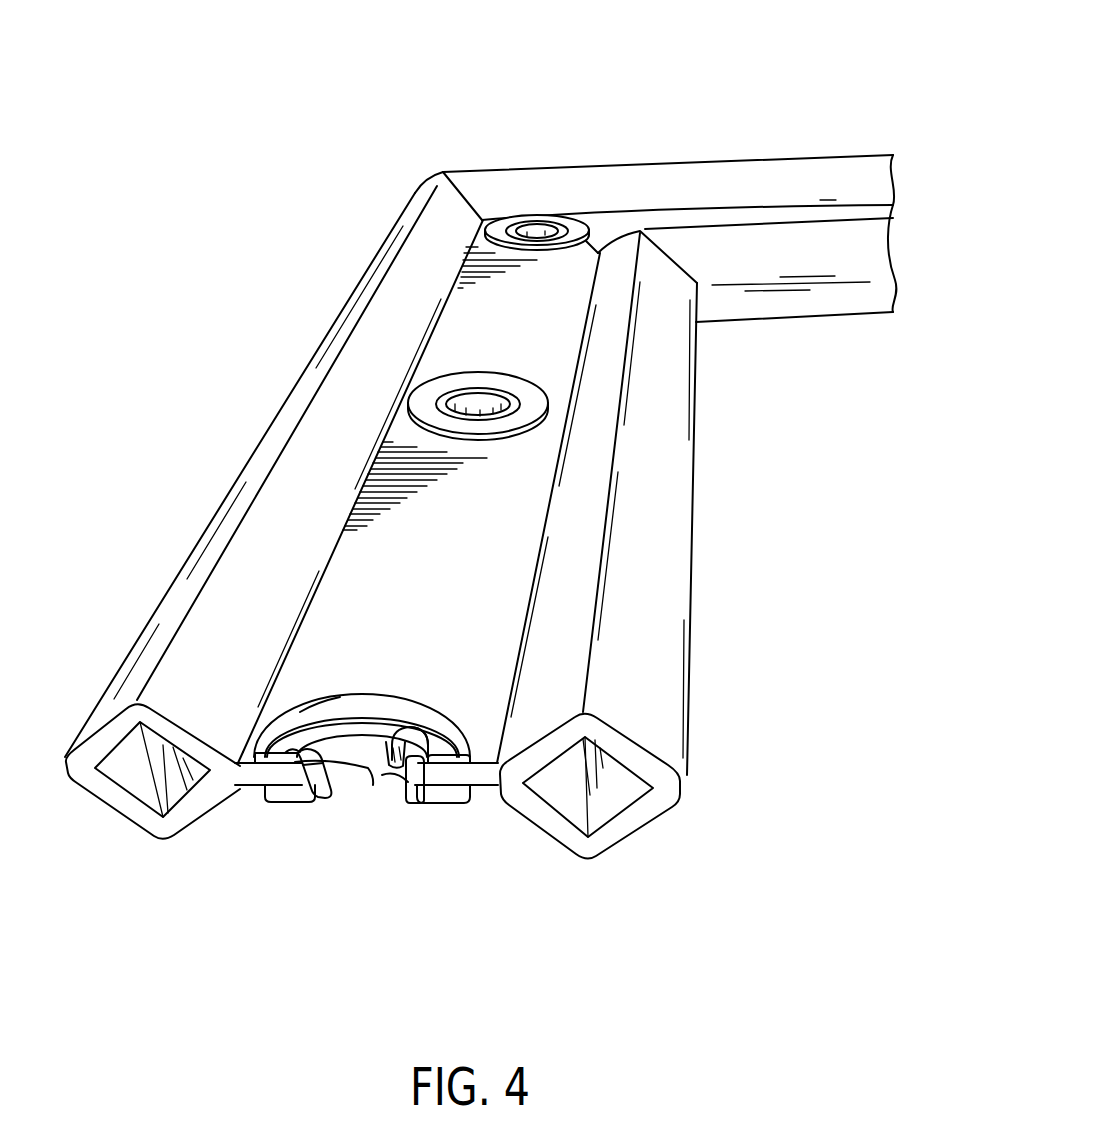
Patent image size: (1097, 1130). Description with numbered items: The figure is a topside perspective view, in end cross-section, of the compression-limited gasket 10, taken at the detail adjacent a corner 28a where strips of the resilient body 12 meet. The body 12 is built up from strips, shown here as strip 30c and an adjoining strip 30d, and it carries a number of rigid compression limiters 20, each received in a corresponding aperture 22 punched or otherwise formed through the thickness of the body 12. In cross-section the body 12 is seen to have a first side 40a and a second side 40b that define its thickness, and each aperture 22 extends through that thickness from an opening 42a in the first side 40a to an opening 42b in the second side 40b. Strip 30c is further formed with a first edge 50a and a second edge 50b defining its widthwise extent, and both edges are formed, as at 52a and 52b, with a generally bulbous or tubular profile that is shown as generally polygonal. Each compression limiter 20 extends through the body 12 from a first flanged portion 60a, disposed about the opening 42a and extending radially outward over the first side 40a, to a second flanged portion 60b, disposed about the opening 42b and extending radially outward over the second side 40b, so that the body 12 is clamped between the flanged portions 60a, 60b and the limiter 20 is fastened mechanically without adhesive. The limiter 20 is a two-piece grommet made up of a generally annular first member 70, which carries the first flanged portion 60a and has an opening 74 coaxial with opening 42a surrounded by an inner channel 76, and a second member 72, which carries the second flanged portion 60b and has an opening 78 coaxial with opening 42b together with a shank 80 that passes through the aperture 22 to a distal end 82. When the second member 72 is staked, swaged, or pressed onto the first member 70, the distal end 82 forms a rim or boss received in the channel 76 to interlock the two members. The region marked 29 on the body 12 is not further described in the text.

The compression-limited gasket 10 is at (645, 161).
The resilient body 12 is at (752, 156).
The compression limiter 20 is at (577, 222).
The aperture 22 is at (589, 240).
The corner 28a is at (443, 170).
The inner surface 29 is at (761, 541).
The strip 30c is at (303, 375).
The top surface of frame member 30d is at (515, 170).
The first side 40a is at (240, 752).
The second side 40b is at (237, 786).
The opening 42a is at (330, 796).
The opening 42b is at (321, 800).
The first edge 50a is at (263, 539).
The second edge 50b is at (654, 589).
The bulbous tubular profile 52a is at (88, 813).
The bulbous tubular profile 52b is at (641, 855).
The first flanged portion 60a is at (485, 772).
The second flanged portion 60b is at (463, 805).
The first member 70 is at (298, 751).
The second member 72 is at (282, 803).
The opening 74 is at (370, 770).
The inner channel 76 is at (322, 699).
The opening 78 is at (388, 744).
The shank 80 is at (410, 805).
The distal end 82 is at (426, 733).